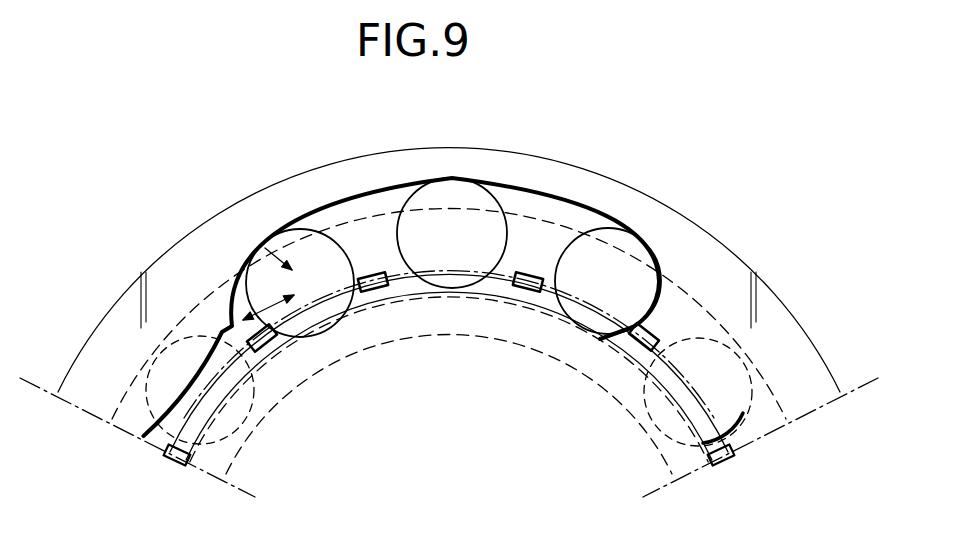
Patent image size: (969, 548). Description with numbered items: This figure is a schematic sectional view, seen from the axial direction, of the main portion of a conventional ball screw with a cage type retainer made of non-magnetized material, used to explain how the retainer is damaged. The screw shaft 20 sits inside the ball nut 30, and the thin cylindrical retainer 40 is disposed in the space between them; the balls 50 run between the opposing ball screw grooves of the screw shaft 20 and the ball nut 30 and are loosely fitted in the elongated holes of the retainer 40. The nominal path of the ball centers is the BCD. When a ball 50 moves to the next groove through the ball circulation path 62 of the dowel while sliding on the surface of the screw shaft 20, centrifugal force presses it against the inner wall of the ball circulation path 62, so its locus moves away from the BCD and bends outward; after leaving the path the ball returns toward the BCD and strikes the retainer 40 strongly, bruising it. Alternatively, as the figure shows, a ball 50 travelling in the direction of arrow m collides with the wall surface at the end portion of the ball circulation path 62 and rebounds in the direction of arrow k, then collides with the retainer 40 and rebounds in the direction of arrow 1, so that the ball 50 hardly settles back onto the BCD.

The arrow 1 is at (289, 298).
The screw shaft 20 is at (597, 367).
The ball nut 30 is at (688, 238).
The cage type retainer 40 is at (660, 325).
The ball 50 is at (453, 188).
The ball circulation path 62 is at (553, 207).
The arrow k is at (265, 248).
The arrow m is at (253, 317).
The element BCD is at (735, 413).